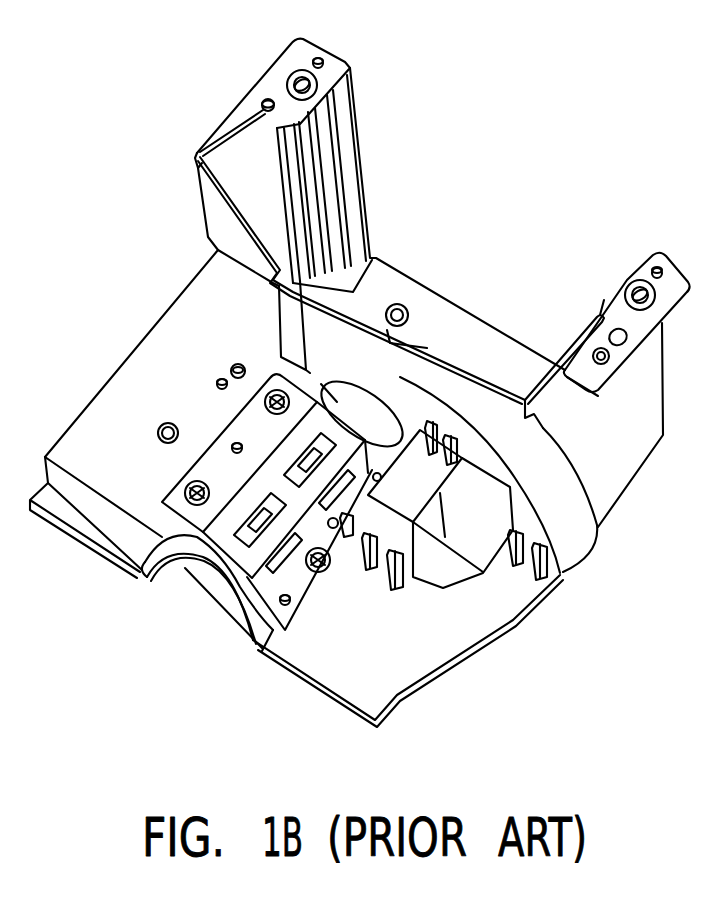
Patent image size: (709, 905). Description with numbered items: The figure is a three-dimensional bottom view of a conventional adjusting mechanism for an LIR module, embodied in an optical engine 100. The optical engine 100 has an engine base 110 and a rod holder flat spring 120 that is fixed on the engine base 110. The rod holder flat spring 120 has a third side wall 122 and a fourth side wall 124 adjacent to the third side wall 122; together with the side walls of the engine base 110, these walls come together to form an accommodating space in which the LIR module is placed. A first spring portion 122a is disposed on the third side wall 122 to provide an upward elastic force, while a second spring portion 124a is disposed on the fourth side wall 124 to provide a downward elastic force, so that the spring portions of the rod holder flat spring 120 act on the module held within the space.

The optical engine 100 is at (598, 745).
The engine base 110 is at (333, 667).
The rod holder flat spring 120 is at (243, 758).
The third side wall 122 is at (240, 547).
The first spring portion 122a is at (257, 520).
The fourth side wall 124 is at (248, 595).
The second spring portion 124a is at (310, 595).